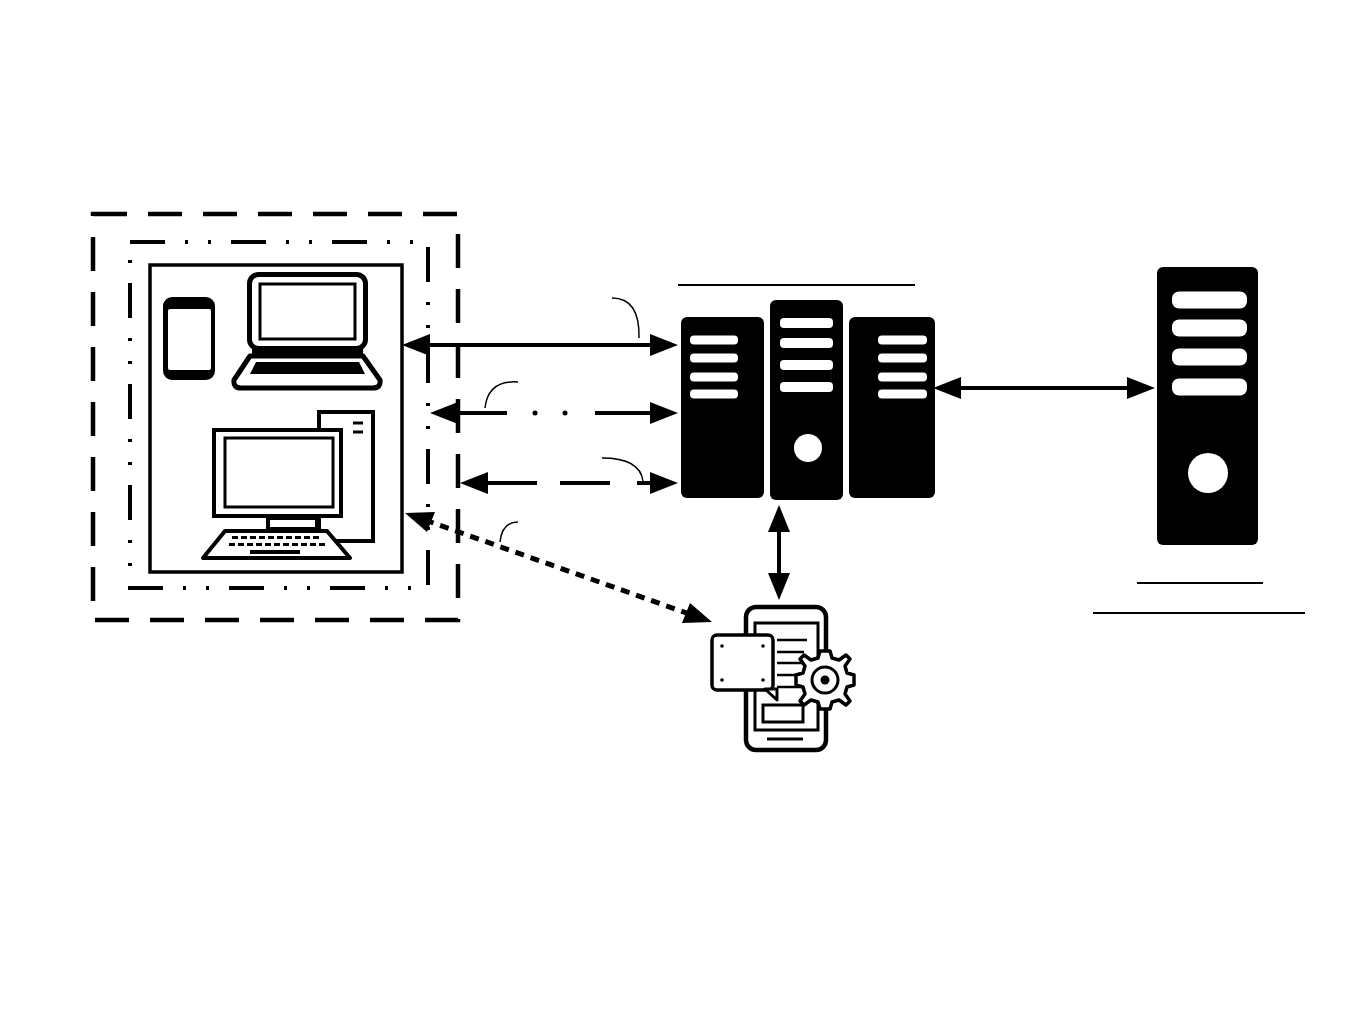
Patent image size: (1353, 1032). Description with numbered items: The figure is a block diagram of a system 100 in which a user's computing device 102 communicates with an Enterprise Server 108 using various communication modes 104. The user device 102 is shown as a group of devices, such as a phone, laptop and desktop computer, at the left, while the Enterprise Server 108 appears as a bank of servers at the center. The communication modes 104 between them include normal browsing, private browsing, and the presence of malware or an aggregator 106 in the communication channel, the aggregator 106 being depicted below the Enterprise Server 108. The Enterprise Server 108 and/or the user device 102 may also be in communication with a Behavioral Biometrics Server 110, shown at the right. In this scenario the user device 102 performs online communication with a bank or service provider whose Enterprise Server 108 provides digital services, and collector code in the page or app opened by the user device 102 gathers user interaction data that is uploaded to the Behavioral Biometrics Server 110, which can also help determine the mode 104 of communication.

The system 100 is at (728, 62).
The user computing device 102 is at (195, 572).
The communication modes 104 is at (673, 197).
The aggregator 106 is at (807, 618).
The Enterprise Server 108 is at (937, 358).
The Behavioral Biometrics Server 110 is at (1258, 302).